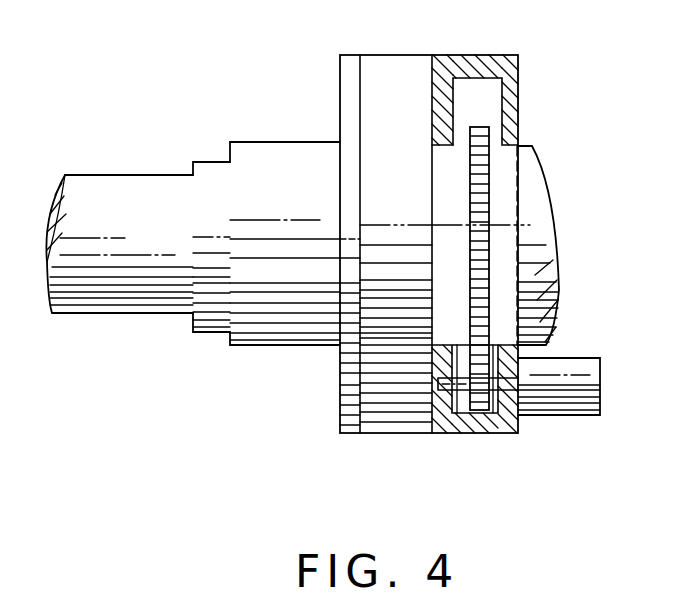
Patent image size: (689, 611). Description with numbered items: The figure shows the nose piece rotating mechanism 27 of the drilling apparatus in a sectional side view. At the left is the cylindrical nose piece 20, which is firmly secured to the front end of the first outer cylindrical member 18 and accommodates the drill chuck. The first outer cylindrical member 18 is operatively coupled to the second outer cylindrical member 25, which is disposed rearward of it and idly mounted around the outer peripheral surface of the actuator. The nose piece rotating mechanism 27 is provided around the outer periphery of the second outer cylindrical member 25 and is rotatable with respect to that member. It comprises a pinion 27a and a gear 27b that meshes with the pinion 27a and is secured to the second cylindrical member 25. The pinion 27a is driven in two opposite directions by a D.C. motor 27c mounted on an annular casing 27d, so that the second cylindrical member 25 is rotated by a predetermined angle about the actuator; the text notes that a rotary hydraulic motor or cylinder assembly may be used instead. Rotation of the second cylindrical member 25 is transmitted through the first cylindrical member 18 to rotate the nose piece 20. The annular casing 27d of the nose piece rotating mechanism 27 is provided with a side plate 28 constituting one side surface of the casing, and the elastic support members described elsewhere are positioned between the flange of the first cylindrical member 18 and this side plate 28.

The first outer cylindrical member 18 is at (292, 146).
The nose piece 20 is at (148, 186).
The second outer cylindrical member 25 is at (530, 157).
The nose piece rotating mechanism 27 is at (456, 440).
The pinion 27a is at (490, 440).
The gear 27b is at (478, 203).
The D.C. motor 27c is at (575, 418).
The annular casing 27d is at (492, 62).
The side plate 28 is at (438, 97).